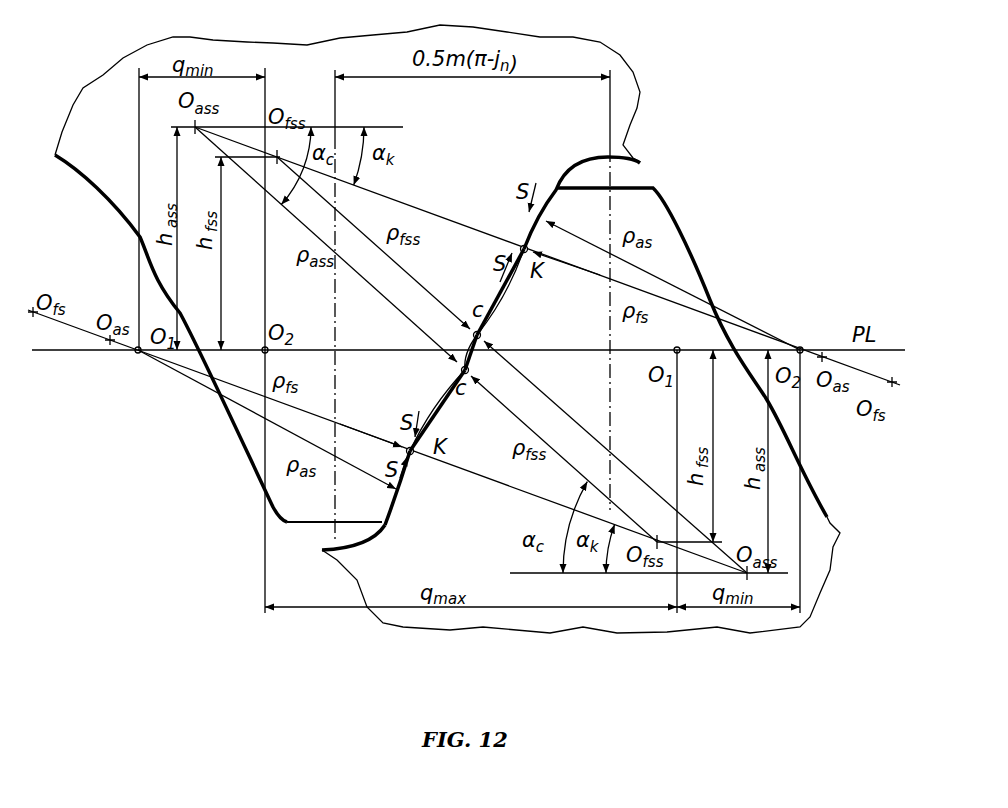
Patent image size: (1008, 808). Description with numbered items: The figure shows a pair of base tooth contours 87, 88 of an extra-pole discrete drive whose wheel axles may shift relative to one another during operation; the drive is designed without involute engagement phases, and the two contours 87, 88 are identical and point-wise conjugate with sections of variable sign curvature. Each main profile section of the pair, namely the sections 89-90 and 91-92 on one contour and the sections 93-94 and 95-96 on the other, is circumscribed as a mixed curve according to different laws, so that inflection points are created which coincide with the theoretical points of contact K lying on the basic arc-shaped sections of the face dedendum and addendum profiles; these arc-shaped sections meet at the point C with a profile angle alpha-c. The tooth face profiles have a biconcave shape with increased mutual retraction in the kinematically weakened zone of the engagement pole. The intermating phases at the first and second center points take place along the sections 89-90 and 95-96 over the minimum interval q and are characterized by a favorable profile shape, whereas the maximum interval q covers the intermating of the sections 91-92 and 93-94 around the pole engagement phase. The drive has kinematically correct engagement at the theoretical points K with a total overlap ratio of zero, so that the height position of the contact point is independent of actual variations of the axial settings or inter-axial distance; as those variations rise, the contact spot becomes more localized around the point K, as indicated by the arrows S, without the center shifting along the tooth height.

The base tooth contour 87 is at (638, 180).
The base tooth contour 88 is at (305, 527).
The main profile section end point 89 is at (558, 190).
The main profile section end point 90 is at (557, 178).
The main profile section end point 91 is at (513, 285).
The main profile section end point 92 is at (490, 308).
The main profile section end point 93 is at (447, 397).
The main profile section end point 94 is at (442, 393).
The main profile section end point 95 is at (410, 480).
The main profile section end point 96 is at (395, 510).